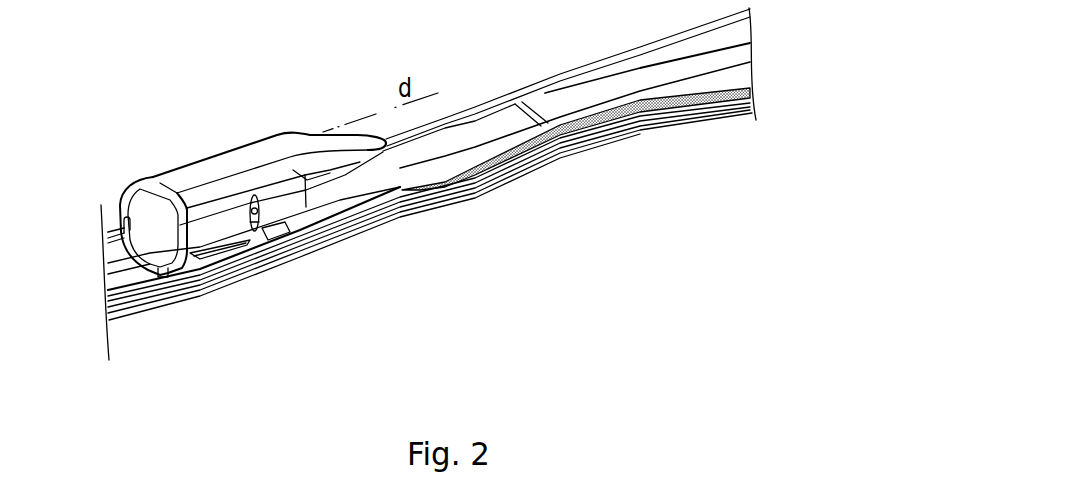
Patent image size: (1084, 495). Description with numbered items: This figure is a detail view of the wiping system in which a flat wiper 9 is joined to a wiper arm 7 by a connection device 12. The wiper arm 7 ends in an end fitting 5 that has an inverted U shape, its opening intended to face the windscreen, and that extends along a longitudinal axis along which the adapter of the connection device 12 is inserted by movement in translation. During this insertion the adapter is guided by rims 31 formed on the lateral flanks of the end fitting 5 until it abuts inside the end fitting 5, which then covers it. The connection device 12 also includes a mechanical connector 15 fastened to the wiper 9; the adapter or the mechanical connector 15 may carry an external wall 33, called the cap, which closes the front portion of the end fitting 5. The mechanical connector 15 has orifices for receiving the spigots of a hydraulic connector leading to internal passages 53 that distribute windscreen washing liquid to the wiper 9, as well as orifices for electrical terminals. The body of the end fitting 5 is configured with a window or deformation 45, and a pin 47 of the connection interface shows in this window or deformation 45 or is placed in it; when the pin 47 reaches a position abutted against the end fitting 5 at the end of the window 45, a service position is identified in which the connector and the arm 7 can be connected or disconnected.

The end fitting 5 is at (222, 167).
The wiper arm 7 is at (593, 91).
The wiper 9 is at (118, 277).
The connection device 12 is at (253, 264).
The mechanical connector 15 is at (266, 243).
The rims 31 is at (303, 248).
The external wall (cap) 33 is at (178, 250).
The window or deformation 45 is at (258, 197).
The pin 47 is at (252, 207).
The internal passages 53 is at (690, 100).